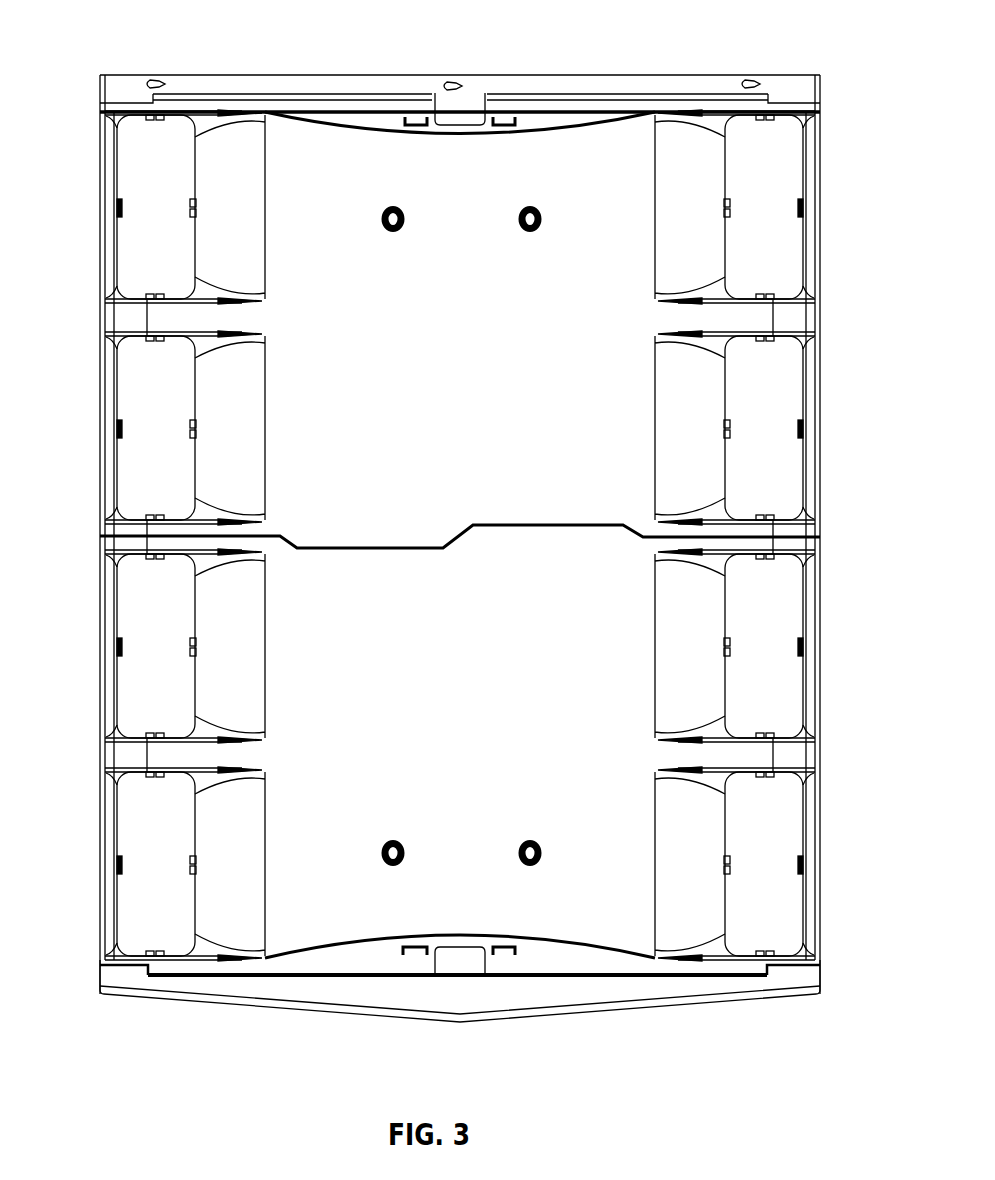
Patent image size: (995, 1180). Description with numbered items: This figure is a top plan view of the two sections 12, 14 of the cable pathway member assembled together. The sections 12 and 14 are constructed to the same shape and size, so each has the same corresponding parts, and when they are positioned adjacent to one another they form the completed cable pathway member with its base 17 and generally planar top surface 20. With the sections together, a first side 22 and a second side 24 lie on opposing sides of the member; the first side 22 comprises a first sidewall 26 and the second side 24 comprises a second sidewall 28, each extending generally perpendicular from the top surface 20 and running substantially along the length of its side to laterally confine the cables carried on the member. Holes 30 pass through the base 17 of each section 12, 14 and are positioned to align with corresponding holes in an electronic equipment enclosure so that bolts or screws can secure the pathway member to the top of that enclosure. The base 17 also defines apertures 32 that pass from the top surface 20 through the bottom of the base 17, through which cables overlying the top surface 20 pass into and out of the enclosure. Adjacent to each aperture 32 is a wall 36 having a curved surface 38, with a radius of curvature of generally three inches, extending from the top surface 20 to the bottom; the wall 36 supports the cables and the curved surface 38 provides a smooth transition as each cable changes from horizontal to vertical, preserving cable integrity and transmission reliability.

The section 12 is at (625, 152).
The section 14 is at (586, 932).
The base 17 is at (293, 495).
The top surface 20 is at (483, 592).
The first side 22 is at (507, 102).
The second side 24 is at (517, 979).
The first sidewall 26 is at (382, 113).
The second sidewall 28 is at (377, 955).
The hole 30 is at (382, 222).
The aperture 32 is at (790, 183).
The wall 36 is at (682, 250).
The curved surface 38 is at (685, 163).